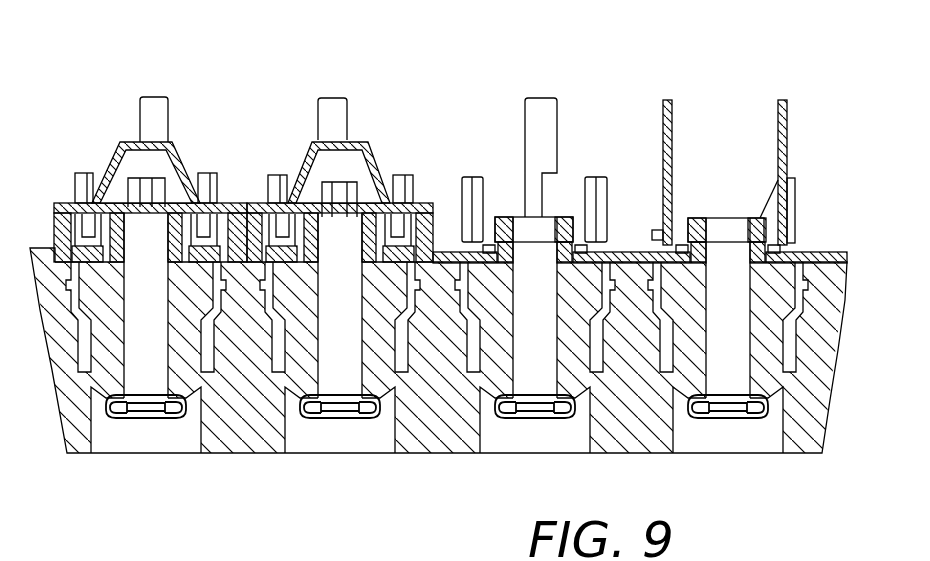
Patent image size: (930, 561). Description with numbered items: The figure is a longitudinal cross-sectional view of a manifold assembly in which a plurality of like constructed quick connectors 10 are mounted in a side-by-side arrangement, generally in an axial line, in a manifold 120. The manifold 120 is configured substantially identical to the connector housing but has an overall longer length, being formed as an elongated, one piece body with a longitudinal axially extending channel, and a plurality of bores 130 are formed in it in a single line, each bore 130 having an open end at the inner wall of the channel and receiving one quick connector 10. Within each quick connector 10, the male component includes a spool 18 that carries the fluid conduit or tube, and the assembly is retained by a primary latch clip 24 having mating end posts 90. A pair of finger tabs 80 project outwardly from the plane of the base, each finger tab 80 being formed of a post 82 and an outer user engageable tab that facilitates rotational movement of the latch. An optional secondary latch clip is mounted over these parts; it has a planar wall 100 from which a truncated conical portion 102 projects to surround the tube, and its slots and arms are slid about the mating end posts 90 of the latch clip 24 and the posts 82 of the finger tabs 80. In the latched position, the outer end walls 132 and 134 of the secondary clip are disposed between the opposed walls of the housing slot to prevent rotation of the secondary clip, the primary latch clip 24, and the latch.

The quick connector 10 is at (182, 105).
The spool 18 is at (188, 372).
The latch clip 24 is at (208, 262).
The finger tabs 80 is at (172, 116).
The post 82 is at (672, 118).
The mating end posts 90 is at (84, 172).
The planar wall 100 is at (60, 205).
The truncated conical portion 102 is at (100, 190).
The manifold 120 is at (258, 438).
The bores 130 is at (92, 437).
The outer end wall 132 is at (250, 203).
The outer end wall 134 is at (418, 203).